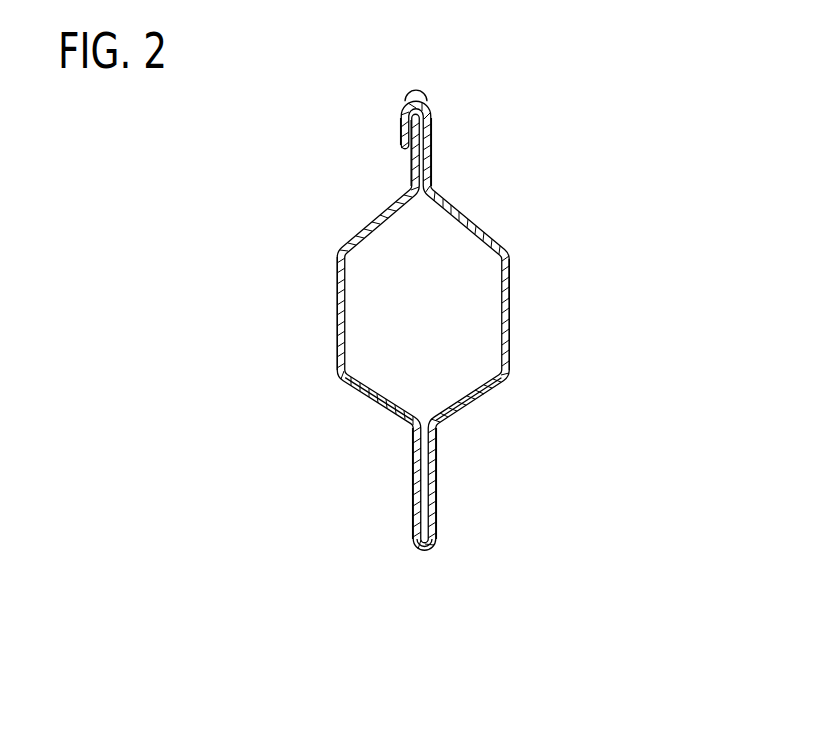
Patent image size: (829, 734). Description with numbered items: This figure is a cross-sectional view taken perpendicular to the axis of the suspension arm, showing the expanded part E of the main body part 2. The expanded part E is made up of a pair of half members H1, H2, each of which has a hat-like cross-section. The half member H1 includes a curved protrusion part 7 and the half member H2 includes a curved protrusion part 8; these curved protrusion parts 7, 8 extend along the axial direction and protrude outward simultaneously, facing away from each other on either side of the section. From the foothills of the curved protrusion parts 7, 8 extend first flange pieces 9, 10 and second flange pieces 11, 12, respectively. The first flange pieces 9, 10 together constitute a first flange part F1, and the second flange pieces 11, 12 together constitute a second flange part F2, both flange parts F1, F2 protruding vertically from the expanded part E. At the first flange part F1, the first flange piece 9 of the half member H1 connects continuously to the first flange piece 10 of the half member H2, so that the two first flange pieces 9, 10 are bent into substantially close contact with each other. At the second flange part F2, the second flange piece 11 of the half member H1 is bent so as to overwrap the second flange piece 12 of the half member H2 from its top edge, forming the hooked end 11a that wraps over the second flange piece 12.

The main body part 2 is at (239, 182).
The curved protrusion part 7 is at (510, 310).
The curved protrusion part 8 is at (337, 322).
The first flange piece 9 is at (438, 500).
The first flange piece 10 is at (413, 500).
The second flange piece 11 is at (431, 158).
The hook end 11a is at (400, 133).
The second flange piece 12 is at (411, 160).
The expanded part E is at (527, 243).
The first flange part F1 is at (440, 527).
The second flange part F2 is at (448, 118).
The half member H1 is at (490, 415).
The half member H2 is at (352, 415).